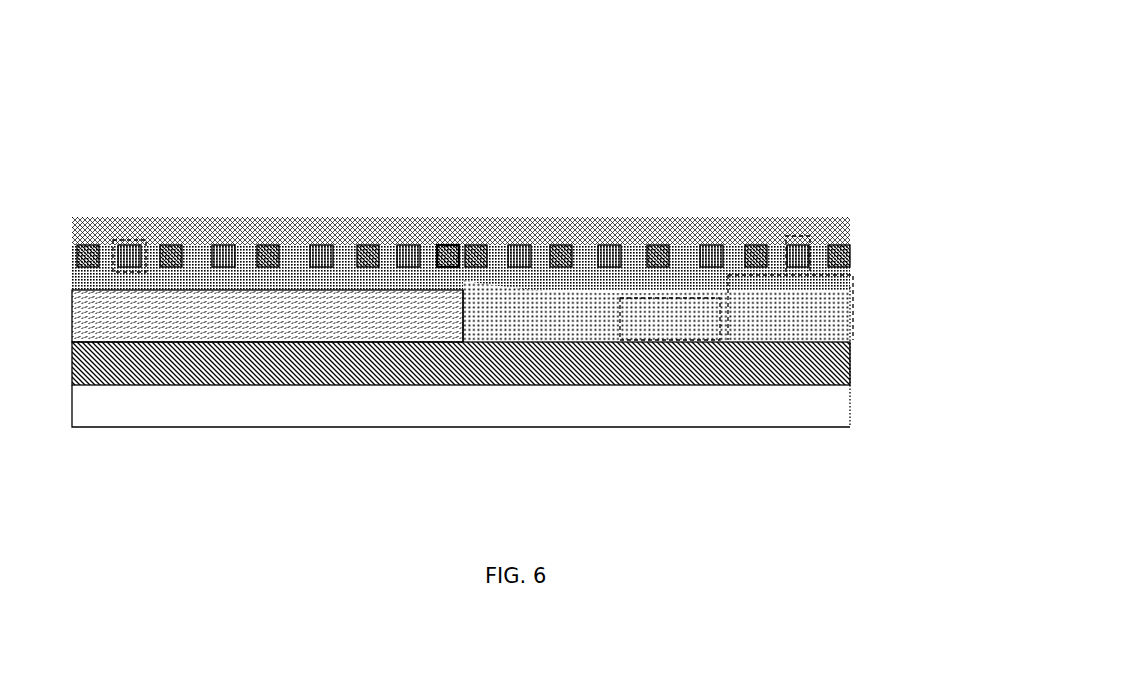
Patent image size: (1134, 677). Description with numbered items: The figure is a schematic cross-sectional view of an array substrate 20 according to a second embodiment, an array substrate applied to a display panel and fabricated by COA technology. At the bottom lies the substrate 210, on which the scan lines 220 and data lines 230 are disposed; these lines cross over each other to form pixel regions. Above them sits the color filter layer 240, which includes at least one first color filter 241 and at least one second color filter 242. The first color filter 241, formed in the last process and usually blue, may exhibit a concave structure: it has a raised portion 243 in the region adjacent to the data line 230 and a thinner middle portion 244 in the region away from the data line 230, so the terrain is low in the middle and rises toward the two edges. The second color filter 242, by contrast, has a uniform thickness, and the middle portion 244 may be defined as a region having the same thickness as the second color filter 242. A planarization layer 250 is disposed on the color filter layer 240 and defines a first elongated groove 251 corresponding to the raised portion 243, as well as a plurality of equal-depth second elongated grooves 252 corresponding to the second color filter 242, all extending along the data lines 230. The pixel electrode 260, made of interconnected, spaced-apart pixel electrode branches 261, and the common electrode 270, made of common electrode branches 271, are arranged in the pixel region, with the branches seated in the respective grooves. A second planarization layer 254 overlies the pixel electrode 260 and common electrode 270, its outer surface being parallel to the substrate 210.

The array substrate 20 is at (133, 44).
The substrate 210 is at (822, 400).
The scan lines 220 is at (529, 363).
The data lines 230 is at (832, 360).
The color filter layer 240 is at (461, 409).
The first color filter 241 is at (505, 320).
The second color filter 242 is at (408, 322).
The raised portion 243 is at (782, 355).
The middle portion 244 is at (678, 350).
The planarization layer 250 is at (837, 267).
The first elongated groove 251 is at (797, 237).
The second elongated grooves 252 is at (117, 243).
The second planarization layer 254 is at (840, 227).
The pixel electrode 260 is at (463, 182).
The pixel electrode branches 261 is at (558, 247).
The common electrode 270 is at (467, 182).
The common electrode branches 271 is at (225, 247).